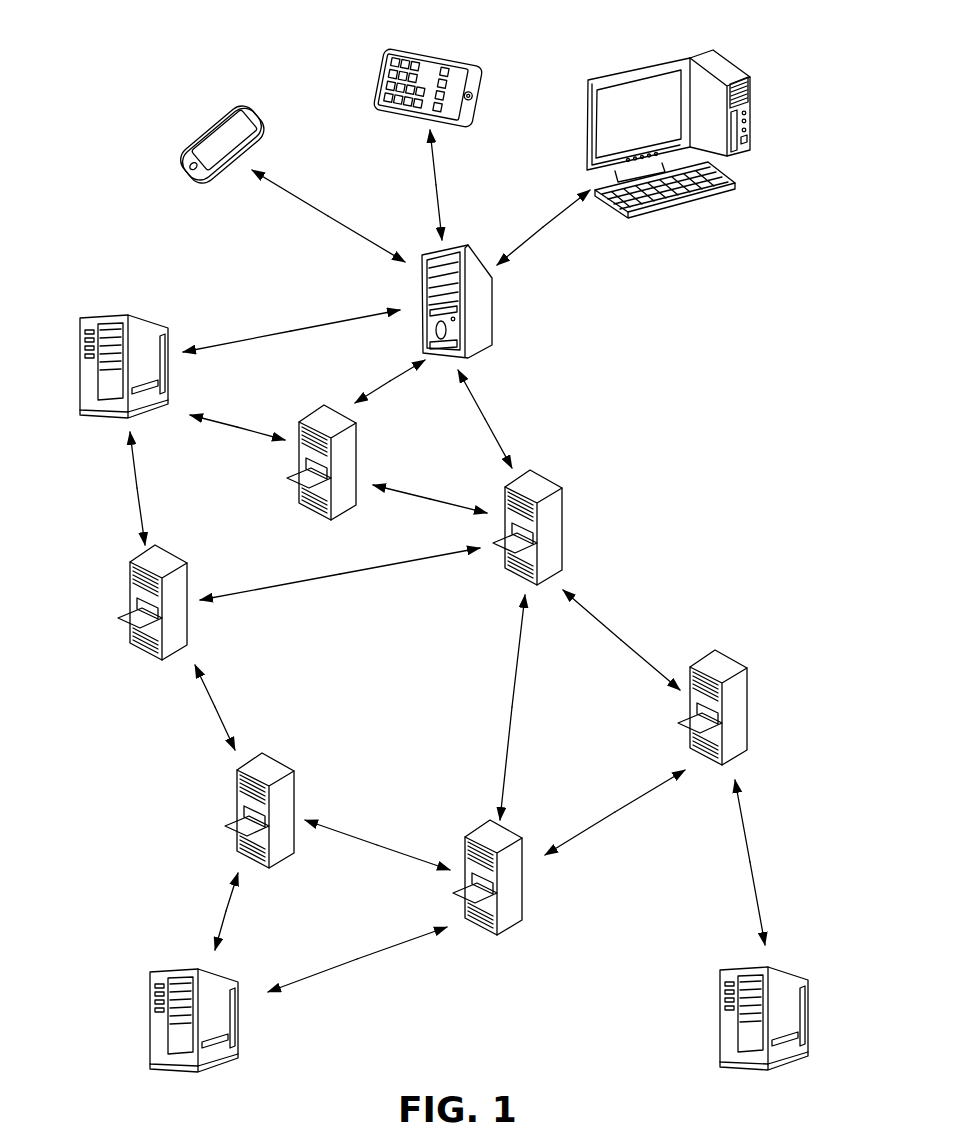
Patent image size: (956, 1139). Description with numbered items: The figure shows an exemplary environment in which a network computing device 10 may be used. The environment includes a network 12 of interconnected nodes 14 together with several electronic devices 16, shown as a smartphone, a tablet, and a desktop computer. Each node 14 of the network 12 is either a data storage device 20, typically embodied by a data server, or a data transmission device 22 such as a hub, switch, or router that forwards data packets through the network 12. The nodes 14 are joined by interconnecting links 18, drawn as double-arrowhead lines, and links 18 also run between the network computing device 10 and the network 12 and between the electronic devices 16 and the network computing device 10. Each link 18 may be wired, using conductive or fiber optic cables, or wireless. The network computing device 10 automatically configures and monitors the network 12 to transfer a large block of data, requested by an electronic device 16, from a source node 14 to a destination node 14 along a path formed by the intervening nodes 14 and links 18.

The network computing device 10 is at (502, 302).
The network 12 is at (698, 451).
The node 14 is at (652, 500).
The electronic device 16 is at (205, 135).
The link 18 is at (338, 208).
The data storage device 20 is at (108, 318).
The data transmission device 22 is at (357, 449).